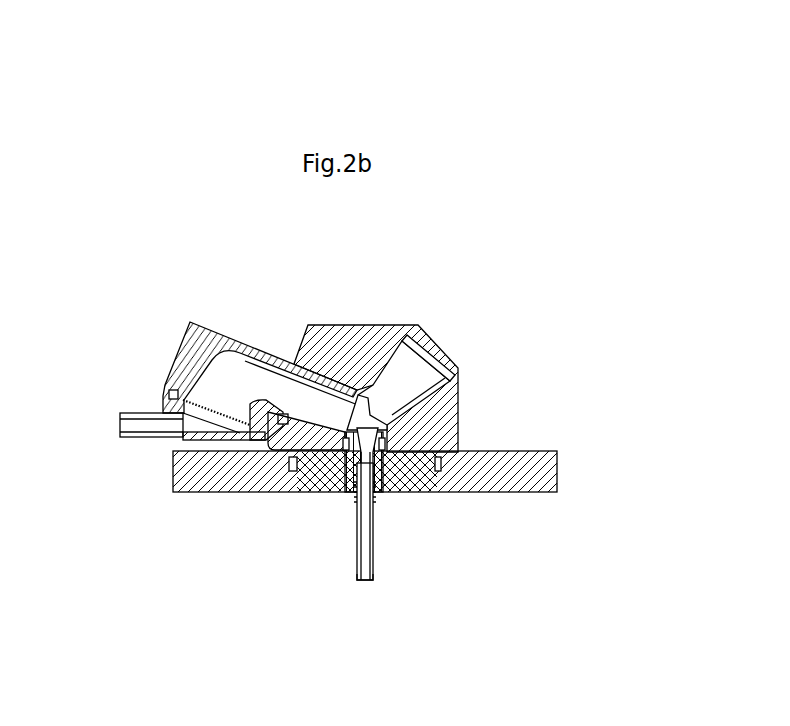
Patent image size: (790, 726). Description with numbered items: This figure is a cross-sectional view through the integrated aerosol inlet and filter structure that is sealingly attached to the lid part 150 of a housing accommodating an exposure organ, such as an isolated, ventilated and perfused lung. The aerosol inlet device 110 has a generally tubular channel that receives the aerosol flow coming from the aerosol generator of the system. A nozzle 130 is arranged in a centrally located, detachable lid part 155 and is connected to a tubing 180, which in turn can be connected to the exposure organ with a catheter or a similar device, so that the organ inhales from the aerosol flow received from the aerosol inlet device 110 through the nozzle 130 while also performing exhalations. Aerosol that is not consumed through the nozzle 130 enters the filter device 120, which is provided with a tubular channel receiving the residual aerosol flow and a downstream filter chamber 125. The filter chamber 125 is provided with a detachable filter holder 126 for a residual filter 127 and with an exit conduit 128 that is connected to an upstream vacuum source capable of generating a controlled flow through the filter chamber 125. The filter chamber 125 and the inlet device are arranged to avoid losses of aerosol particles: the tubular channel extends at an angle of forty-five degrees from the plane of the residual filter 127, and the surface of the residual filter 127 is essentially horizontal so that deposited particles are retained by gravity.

The aerosol inlet device 110 is at (418, 325).
The filter device 120 is at (203, 322).
The filter chamber 125 is at (263, 377).
The detachable filter holder 126 is at (163, 398).
The residual filter 127 is at (215, 402).
The exit conduit 128 is at (120, 413).
The nozzle 130 is at (353, 500).
The lid part 150 is at (555, 452).
The detachable lid part 155 is at (398, 493).
The tubing 180 is at (365, 582).